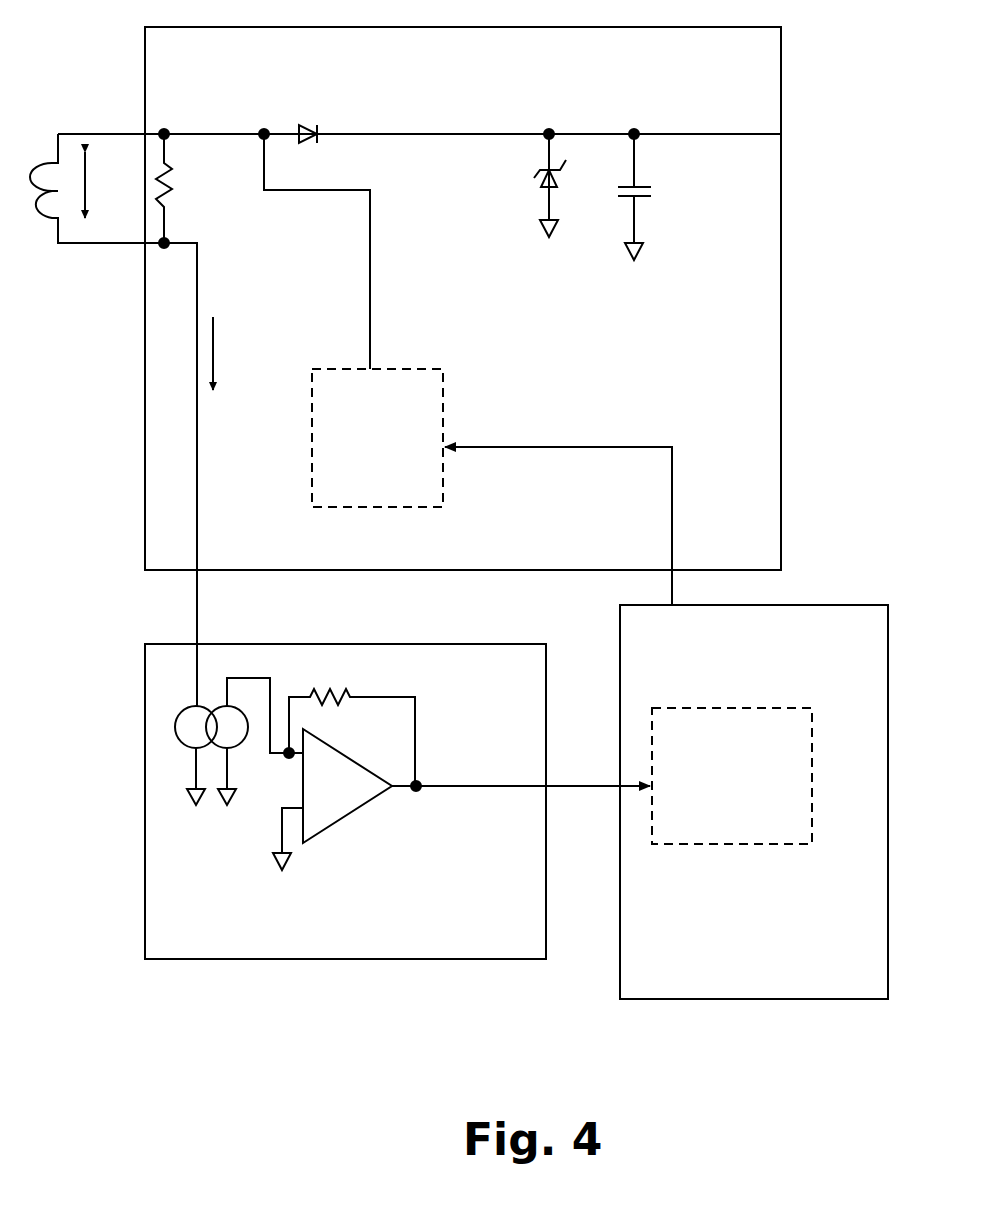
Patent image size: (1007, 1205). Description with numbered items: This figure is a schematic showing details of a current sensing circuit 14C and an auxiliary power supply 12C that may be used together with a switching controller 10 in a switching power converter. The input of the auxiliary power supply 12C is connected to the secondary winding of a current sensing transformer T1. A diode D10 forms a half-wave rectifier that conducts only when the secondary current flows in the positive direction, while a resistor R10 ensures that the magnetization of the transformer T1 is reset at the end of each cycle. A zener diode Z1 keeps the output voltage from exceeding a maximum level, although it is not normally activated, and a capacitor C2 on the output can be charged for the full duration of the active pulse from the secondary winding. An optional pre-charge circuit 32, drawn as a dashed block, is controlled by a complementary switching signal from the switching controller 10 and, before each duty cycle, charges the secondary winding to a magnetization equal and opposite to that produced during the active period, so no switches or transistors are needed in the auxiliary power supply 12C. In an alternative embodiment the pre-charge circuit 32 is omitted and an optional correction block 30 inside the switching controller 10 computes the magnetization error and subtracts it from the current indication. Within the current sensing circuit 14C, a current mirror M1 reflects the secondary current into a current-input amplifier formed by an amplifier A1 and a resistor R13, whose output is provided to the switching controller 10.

The auxiliary power supply 12C is at (463, 298).
The pre-charge circuit 32 is at (377, 438).
The switching controller 10 is at (754, 802).
The correction block 30 is at (732, 776).
The current sensing circuit 14C is at (345, 801).
The current sensing transformer T1 is at (97, 192).
The resistor R10 is at (191, 188).
The diode D10 is at (306, 116).
The zener diode Z1 is at (564, 183).
The capacitor C2 is at (650, 194).
The current mirror M1 is at (233, 741).
The resistor R13 is at (352, 726).
The amplifier A1 is at (332, 799).